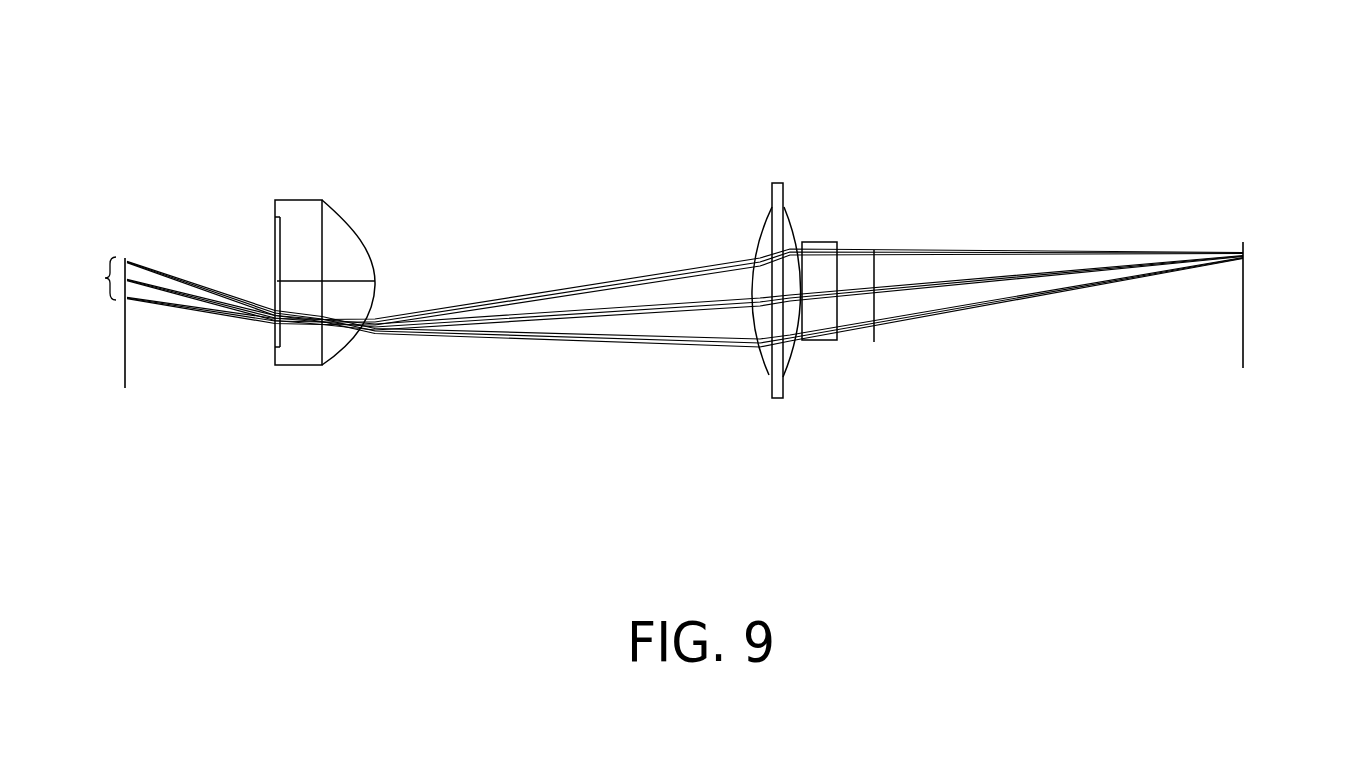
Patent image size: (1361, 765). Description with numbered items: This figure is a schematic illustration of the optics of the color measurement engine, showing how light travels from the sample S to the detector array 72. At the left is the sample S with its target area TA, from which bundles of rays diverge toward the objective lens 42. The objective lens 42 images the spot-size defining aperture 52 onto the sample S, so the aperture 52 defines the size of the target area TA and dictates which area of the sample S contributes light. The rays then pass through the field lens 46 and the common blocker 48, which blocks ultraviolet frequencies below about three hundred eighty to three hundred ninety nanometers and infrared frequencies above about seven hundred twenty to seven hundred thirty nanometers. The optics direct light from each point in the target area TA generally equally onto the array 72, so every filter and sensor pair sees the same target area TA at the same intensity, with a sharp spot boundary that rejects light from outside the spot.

The objective lens 42 is at (305, 223).
The field lens 46 is at (780, 213).
The common blocker 48 is at (830, 239).
The spot-size defining aperture 52 is at (799, 322).
The array 72 is at (1243, 337).
The sample S is at (125, 355).
The target area TA is at (89, 278).